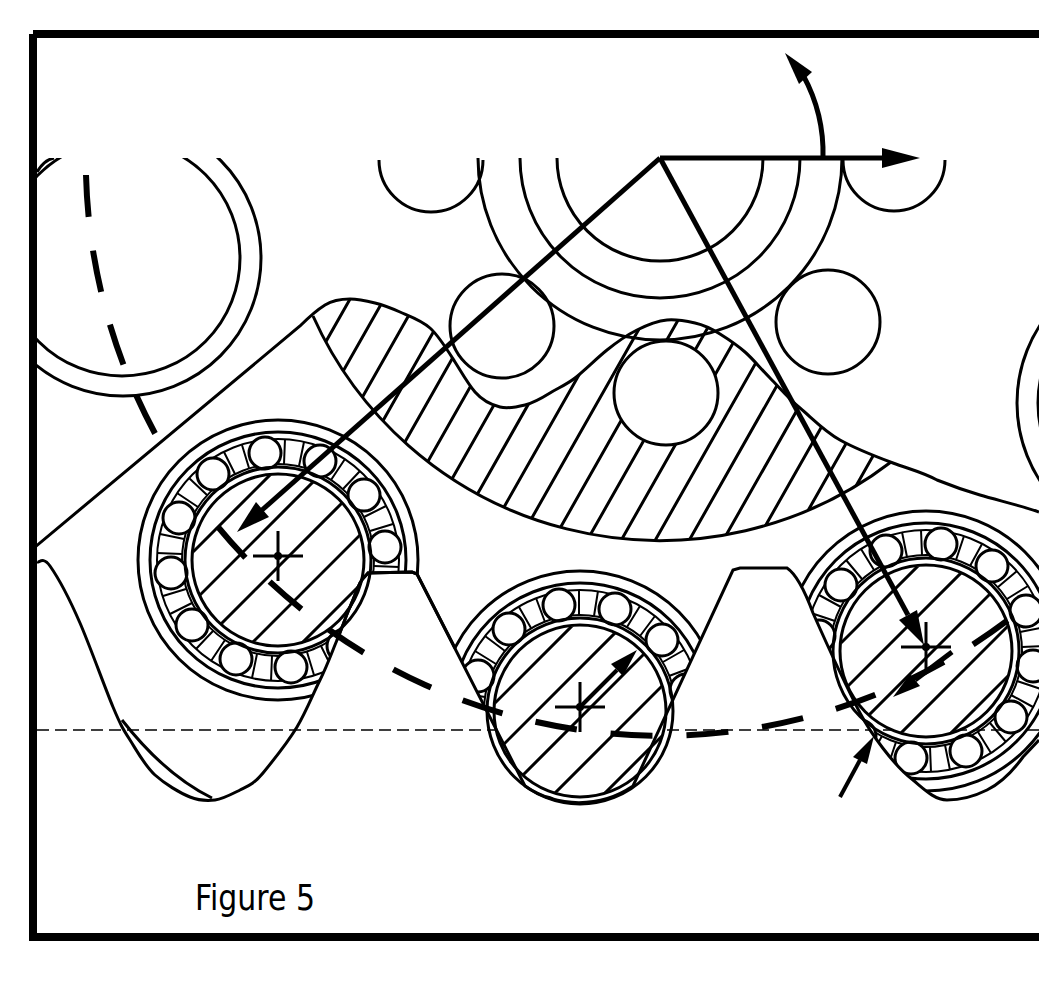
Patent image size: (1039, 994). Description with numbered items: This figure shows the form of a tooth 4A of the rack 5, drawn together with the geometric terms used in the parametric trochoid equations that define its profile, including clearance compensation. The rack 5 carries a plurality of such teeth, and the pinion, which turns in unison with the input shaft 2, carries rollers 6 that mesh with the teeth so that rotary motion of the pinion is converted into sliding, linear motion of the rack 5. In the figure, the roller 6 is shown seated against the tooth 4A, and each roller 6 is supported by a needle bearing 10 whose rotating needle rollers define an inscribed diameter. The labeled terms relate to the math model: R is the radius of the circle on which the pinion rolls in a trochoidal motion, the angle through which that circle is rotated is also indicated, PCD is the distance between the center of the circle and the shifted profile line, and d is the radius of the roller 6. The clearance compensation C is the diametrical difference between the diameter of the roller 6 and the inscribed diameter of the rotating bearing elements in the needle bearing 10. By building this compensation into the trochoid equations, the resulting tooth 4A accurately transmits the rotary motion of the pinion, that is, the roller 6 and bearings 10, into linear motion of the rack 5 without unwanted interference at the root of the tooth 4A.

The input shaft 2 is at (519, 333).
The tooth 4A is at (448, 642).
The rack 5 is at (538, 722).
The roller 6 is at (236, 560).
The needle bearing 10 is at (278, 454).
The radius of circle R is at (467, 297).
The distance between center of circle and shifted profile line PCD is at (829, 430).
The radius of roller d is at (597, 676).
The clearance compensation C is at (839, 798).